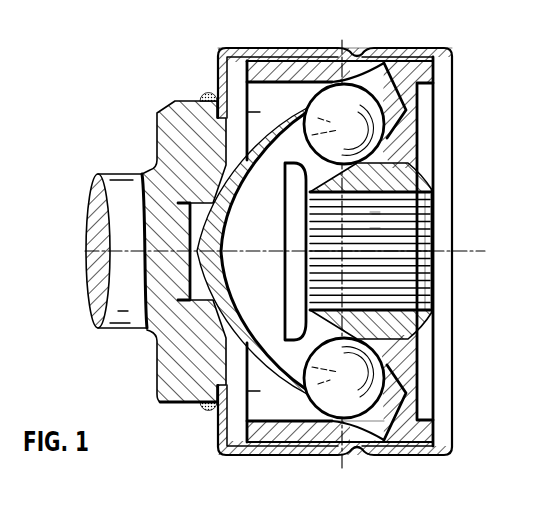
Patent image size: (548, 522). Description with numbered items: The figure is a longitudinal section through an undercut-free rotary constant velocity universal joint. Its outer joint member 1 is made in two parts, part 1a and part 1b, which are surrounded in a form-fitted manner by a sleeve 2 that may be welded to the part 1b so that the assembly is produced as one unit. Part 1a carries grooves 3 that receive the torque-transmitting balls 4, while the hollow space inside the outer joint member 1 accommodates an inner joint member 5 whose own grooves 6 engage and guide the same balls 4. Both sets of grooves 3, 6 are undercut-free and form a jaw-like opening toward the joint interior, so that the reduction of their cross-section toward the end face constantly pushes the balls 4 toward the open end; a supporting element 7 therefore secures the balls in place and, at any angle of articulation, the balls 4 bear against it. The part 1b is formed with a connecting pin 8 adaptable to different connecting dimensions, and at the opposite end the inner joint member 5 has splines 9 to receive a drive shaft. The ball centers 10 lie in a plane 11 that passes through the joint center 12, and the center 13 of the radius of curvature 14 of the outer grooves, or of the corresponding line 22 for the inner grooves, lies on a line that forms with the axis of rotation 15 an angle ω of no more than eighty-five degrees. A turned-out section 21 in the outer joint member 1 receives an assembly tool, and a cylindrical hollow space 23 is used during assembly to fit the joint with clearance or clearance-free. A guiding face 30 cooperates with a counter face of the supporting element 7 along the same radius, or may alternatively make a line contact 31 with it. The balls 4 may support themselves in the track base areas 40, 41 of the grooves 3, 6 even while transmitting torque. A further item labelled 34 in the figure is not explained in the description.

The outer joint member 1 is at (286, 42).
The part of the outer joint member 1a is at (317, 67).
The part of the outer joint member 1b is at (197, 127).
The sleeve 2 is at (407, 52).
The grooves 3 is at (441, 49).
The torque-transmitting balls 4 is at (359, 107).
The inner joint member 5 is at (396, 173).
The grooves 6 is at (394, 157).
The supporting element 7 is at (262, 122).
The connecting pin 8 is at (118, 172).
The splines 9 is at (364, 274).
The ball centers 10 is at (385, 384).
The plane 11 is at (425, 266).
The joint center 12 is at (374, 231).
The center of the radius of curvature 13 is at (284, 290).
The radius of curvature 14 is at (374, 213).
The axis of rotation 15 is at (458, 243).
The turned-out section 21 is at (426, 420).
The line 22 is at (374, 213).
The cylindrical hollow space 23 is at (238, 430).
The guiding face 30 is at (197, 411).
The line contact 31 is at (173, 403).
The arrows 34 is at (314, 340).
The track base area 40 is at (374, 441).
The track base area 41 is at (383, 353).